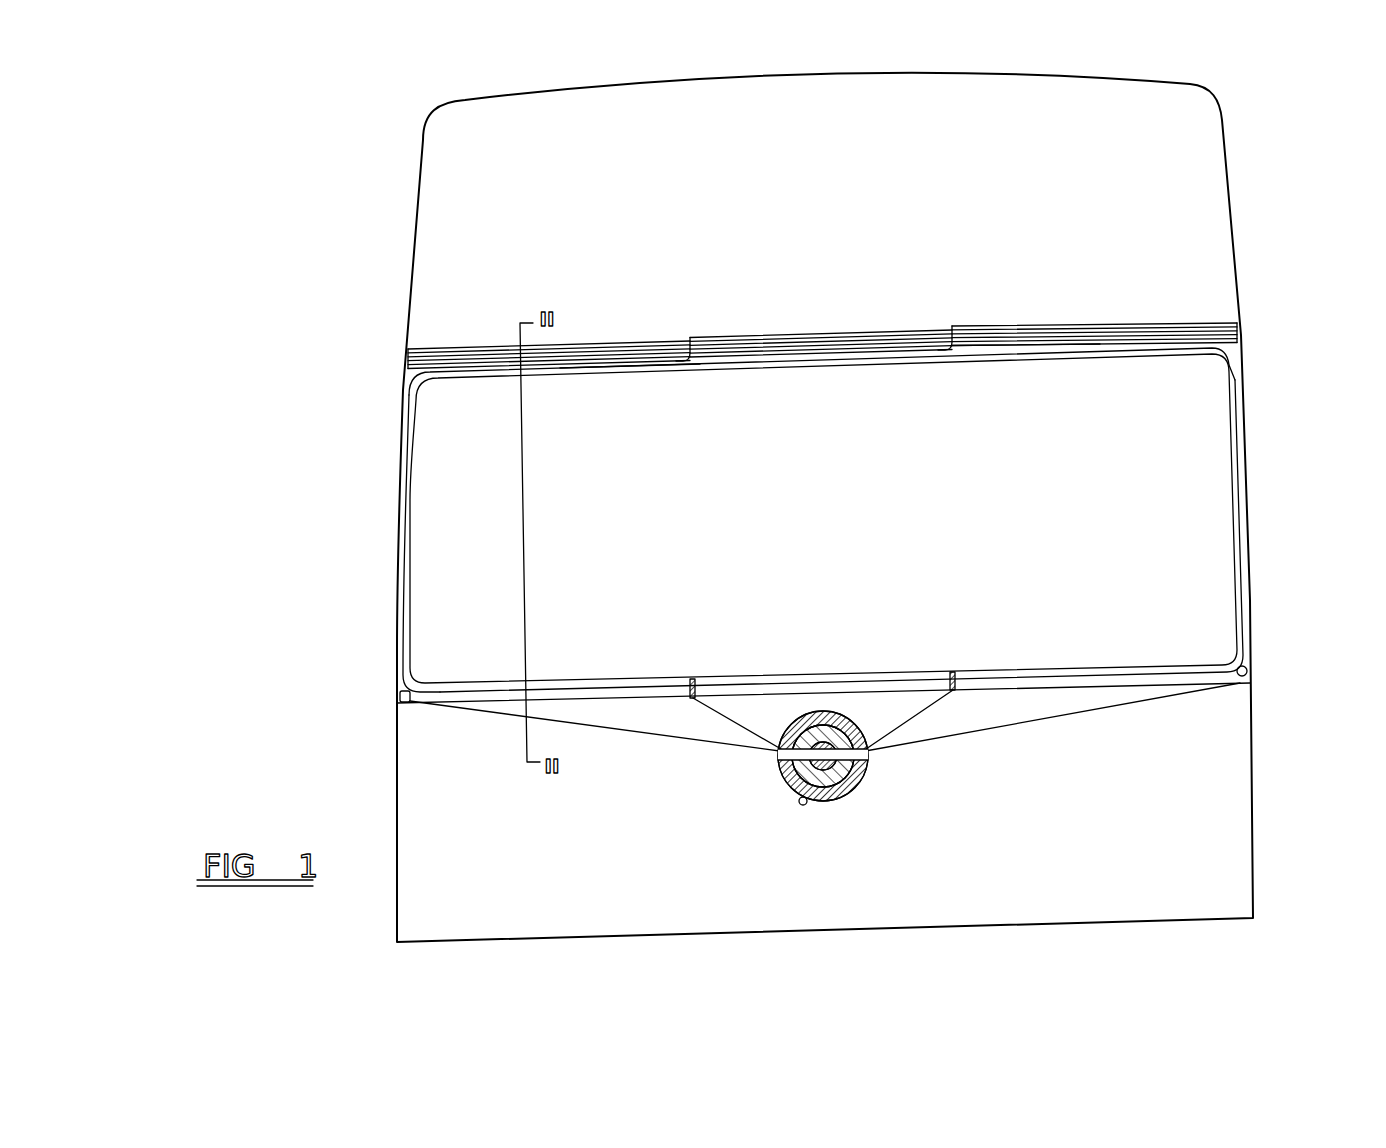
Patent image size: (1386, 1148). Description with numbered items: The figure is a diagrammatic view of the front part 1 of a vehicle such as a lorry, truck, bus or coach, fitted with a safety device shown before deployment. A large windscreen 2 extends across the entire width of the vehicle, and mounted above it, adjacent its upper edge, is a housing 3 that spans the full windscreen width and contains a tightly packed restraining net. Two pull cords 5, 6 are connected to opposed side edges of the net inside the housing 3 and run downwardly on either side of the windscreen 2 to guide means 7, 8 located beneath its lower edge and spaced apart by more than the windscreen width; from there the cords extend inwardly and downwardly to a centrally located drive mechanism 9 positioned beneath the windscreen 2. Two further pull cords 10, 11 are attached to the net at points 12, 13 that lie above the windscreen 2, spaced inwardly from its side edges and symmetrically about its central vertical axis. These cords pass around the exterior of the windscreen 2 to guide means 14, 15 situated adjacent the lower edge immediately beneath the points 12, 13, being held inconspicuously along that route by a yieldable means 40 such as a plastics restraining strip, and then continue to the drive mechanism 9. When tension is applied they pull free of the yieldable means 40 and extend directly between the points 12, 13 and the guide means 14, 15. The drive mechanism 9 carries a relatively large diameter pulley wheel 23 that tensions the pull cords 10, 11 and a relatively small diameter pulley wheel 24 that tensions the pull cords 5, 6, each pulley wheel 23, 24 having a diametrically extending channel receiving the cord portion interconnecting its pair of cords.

The front part of the vehicle 1 is at (1262, 210).
The windscreen 2 is at (1193, 422).
The housing 3 is at (1210, 322).
The pull cord 5 is at (1253, 457).
The pull cord 6 is at (395, 492).
The guide means 7 is at (1250, 668).
The guide means 8 is at (395, 697).
The drive mechanism 9 is at (814, 736).
The further pull cord 10 is at (997, 352).
The further pull cord 11 is at (618, 370).
The connection point 12 is at (950, 320).
The connection point 13 is at (712, 327).
The guide means 14 is at (953, 680).
The guide means 15 is at (690, 678).
The large diameter pulley wheel 23 is at (867, 730).
The small diameter pulley wheel 24 is at (842, 797).
The yieldable means 40 is at (1227, 352).